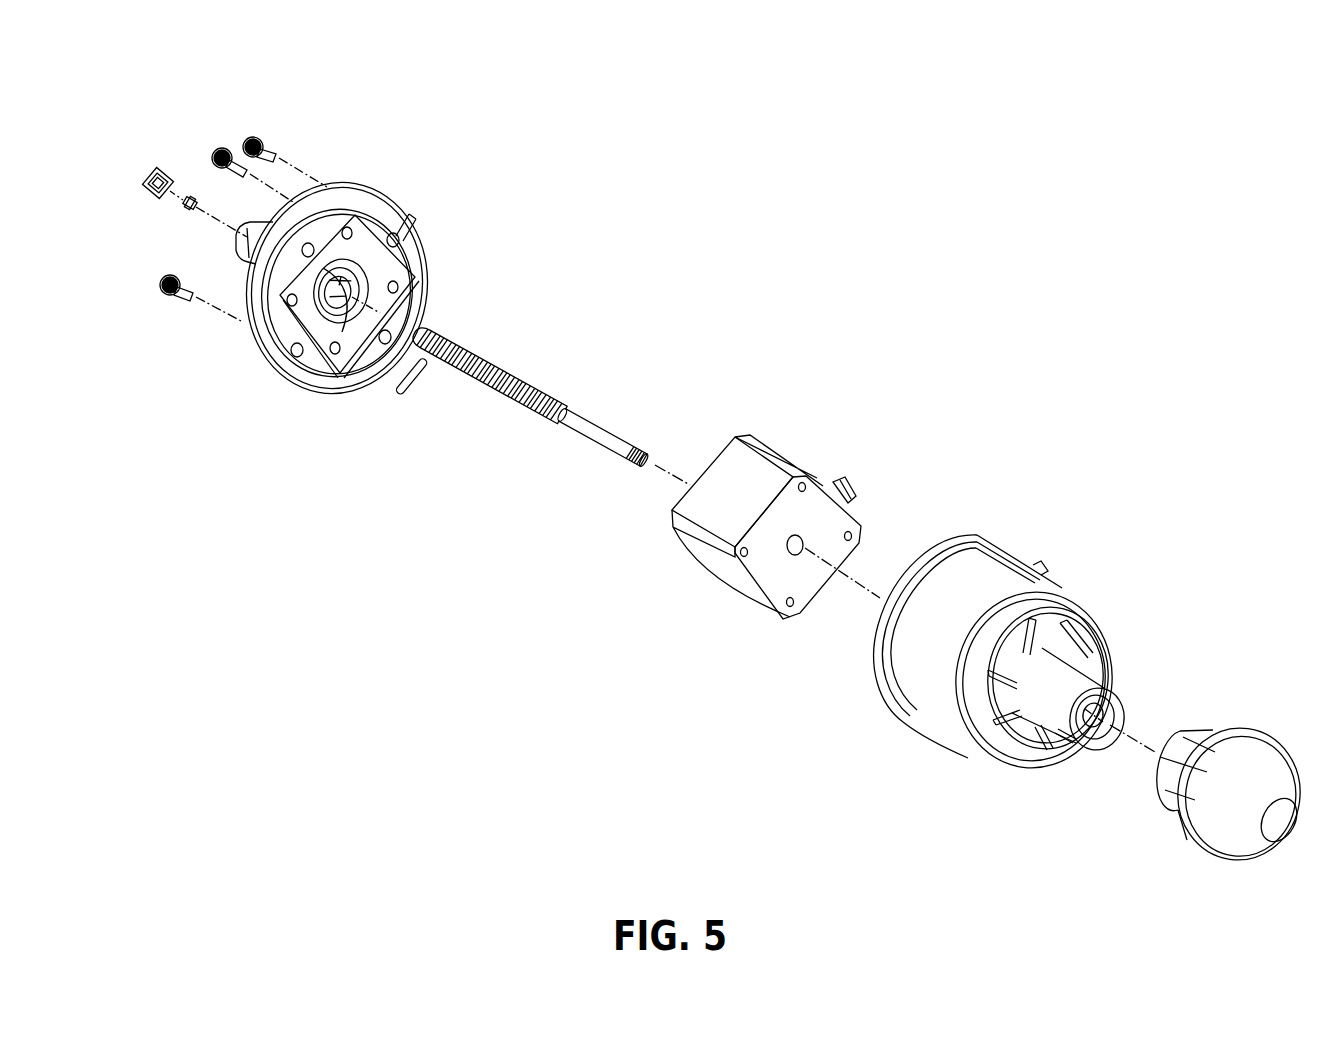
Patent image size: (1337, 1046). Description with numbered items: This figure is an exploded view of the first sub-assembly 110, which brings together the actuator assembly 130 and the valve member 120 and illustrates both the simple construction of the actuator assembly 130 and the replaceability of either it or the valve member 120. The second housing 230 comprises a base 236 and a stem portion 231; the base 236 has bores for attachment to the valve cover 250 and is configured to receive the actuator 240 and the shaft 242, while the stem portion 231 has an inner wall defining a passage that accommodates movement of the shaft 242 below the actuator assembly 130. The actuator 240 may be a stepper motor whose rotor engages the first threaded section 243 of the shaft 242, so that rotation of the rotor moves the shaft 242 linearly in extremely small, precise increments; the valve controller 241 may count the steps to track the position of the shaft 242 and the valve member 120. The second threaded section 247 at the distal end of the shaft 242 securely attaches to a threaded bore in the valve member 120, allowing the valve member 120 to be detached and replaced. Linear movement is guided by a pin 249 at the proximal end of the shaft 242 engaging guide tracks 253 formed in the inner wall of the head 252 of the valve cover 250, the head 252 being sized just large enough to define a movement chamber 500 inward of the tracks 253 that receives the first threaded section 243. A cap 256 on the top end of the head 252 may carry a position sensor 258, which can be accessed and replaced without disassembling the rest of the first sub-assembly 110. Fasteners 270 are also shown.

The first sub-assembly 110 is at (1165, 128).
The valve member 120 is at (1212, 732).
The actuator assembly 130 is at (943, 260).
The second housing 230 is at (1088, 651).
The stem portion 231 is at (1108, 665).
The base 236 is at (1073, 590).
The actuator 240 is at (778, 447).
The valve controller 241 is at (835, 474).
The shaft 242 is at (535, 435).
The first threaded section 243 is at (548, 385).
The second threaded section 247 is at (648, 450).
The pin 249 is at (412, 387).
The valve cover 250 is at (370, 186).
The head 252 is at (247, 250).
The guide tracks 253 is at (366, 278).
The cap 256 is at (140, 194).
The position sensor 258 is at (186, 208).
The fasteners 270 is at (250, 138).
The movement chamber 500 is at (358, 318).